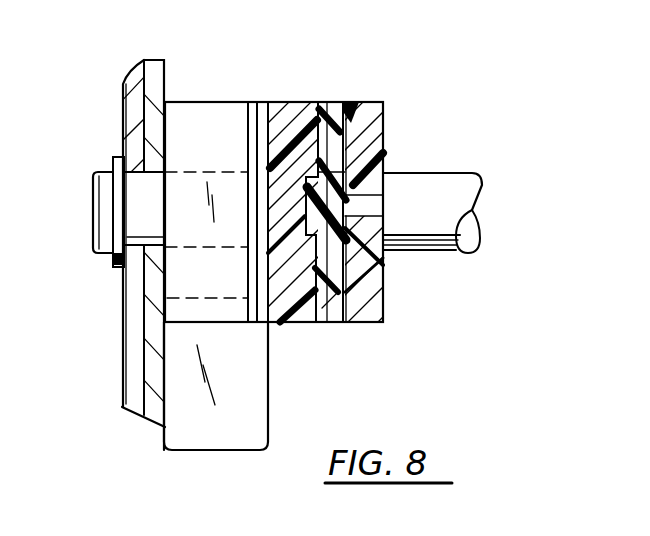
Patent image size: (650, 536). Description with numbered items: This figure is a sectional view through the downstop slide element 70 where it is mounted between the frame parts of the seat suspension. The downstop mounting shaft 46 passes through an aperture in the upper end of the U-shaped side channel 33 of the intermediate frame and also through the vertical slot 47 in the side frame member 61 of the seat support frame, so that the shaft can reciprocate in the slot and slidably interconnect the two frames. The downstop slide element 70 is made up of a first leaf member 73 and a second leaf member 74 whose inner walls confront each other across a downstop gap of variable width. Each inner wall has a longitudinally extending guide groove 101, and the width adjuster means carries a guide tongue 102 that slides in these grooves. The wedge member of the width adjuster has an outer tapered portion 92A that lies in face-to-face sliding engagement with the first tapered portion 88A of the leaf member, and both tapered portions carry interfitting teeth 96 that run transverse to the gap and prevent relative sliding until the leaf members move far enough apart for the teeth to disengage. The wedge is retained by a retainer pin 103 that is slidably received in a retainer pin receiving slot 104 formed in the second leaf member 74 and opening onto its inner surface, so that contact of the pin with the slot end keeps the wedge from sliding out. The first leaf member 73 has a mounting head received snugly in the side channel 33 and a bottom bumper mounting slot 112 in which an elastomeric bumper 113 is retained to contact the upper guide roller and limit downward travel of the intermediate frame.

The side channel 33 is at (165, 66).
The downstop mounting shaft 46 is at (93, 185).
The slot 47 is at (130, 283).
The side frame member 61 is at (120, 83).
The downstop slide element 70 is at (396, 101).
The first leaf member 73 is at (278, 110).
The second leaf member 74 is at (363, 101).
The first tapered portion 88A is at (323, 318).
The second outer tapered portion 92A is at (348, 253).
The teeth 96 is at (345, 302).
The guide groove 101 is at (314, 200).
The guide tongue 102 is at (352, 238).
The retainer pin 103 is at (383, 210).
The retainer pin receiving slot 104 is at (383, 207).
The bottom bumper mounting slot 112 is at (164, 292).
The elastomeric bumper 113 is at (215, 425).